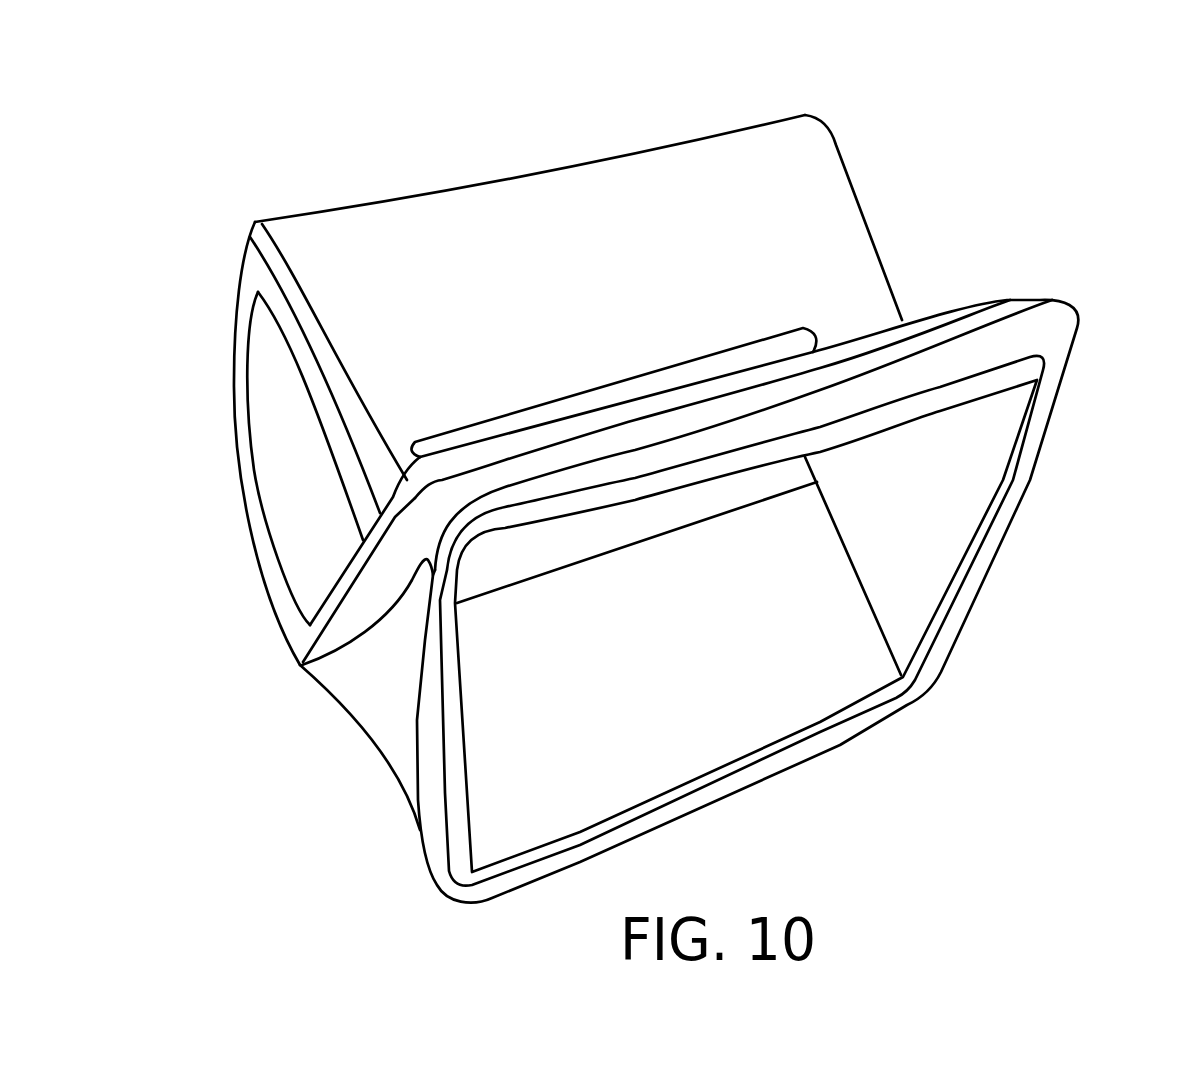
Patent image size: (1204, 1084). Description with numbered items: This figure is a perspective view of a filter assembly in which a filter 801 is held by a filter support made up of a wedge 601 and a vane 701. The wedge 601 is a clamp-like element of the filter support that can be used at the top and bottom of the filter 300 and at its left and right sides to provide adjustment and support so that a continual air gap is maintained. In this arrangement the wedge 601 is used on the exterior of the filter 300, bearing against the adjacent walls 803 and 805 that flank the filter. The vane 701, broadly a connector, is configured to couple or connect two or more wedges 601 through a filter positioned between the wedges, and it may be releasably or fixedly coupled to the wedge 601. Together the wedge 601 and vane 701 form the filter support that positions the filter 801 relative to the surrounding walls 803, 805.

The filter 300 is at (805, 115).
The adjacent wall 803 is at (475, 235).
The adjacent wall 805 is at (400, 482).
The wedge 601 is at (826, 330).
The filter 801 is at (1083, 312).
The vane 701 is at (733, 477).